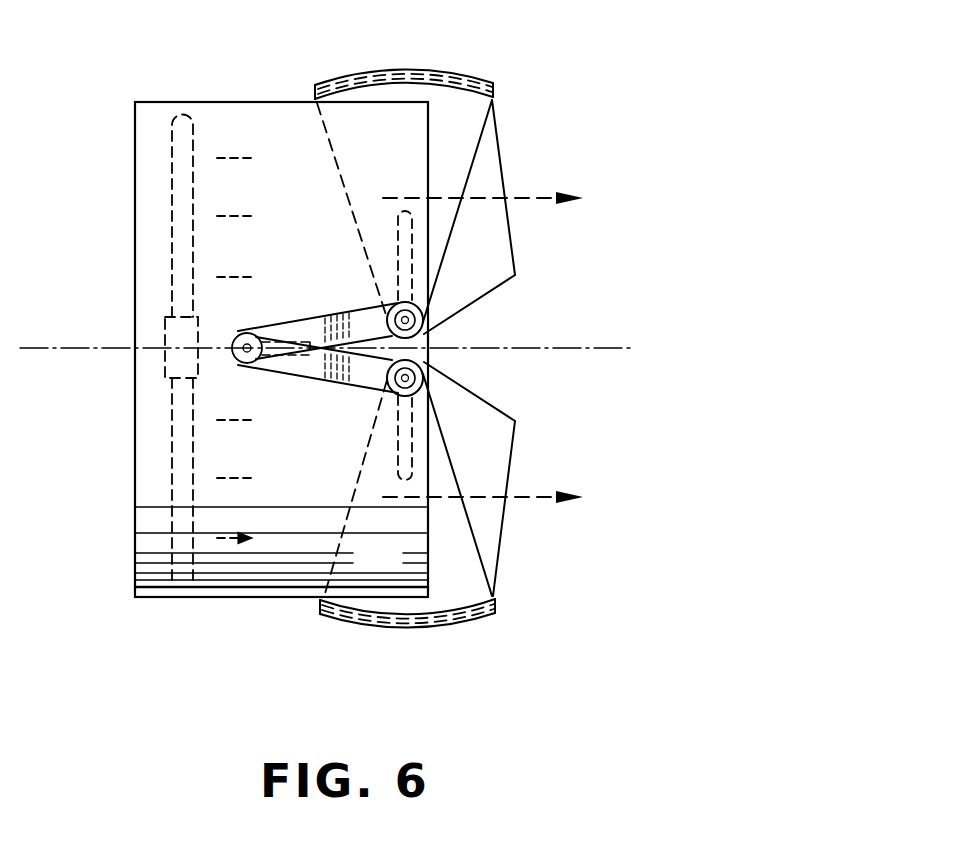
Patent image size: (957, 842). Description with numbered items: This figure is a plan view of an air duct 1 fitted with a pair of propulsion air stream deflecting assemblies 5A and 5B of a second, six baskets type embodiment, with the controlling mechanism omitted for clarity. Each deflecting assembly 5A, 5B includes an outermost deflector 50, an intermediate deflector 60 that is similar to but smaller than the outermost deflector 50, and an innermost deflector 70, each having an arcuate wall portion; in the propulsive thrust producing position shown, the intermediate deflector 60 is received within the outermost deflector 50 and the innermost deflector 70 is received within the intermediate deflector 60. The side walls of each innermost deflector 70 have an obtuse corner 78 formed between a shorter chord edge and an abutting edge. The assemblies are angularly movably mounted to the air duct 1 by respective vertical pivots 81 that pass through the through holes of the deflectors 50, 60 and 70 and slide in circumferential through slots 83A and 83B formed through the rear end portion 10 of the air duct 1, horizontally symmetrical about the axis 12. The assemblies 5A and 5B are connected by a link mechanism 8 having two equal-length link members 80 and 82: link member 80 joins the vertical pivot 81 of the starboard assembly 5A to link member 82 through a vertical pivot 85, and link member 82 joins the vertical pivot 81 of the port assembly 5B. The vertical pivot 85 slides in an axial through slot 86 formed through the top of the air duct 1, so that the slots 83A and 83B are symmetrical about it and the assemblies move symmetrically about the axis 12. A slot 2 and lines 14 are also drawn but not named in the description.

The air duct 1 is at (232, 106).
The guide slot 2 is at (175, 162).
The starboard side propulsion air stream deflecting assembly 5A is at (523, 170).
The port side propulsion air stream deflecting assembly 5B is at (523, 520).
The link mechanism 8 is at (295, 376).
The rear end portion of the air duct 10 is at (455, 357).
The axis 12 is at (587, 347).
The bottom guide plates 14 is at (432, 524).
The outermost deflector 50 is at (403, 68).
The intermediate deflector 60 is at (452, 80).
The innermost deflector 70 is at (496, 142).
The obtuse corner 78 is at (519, 278).
The link member 80 is at (317, 323).
The vertical pivot 81 is at (385, 308).
The link member 82 is at (328, 385).
The circumferential through slot 83A is at (405, 240).
The circumferential through slot 83B is at (405, 434).
The vertical pivot 85 is at (242, 364).
The axial through slot 86 is at (305, 362).